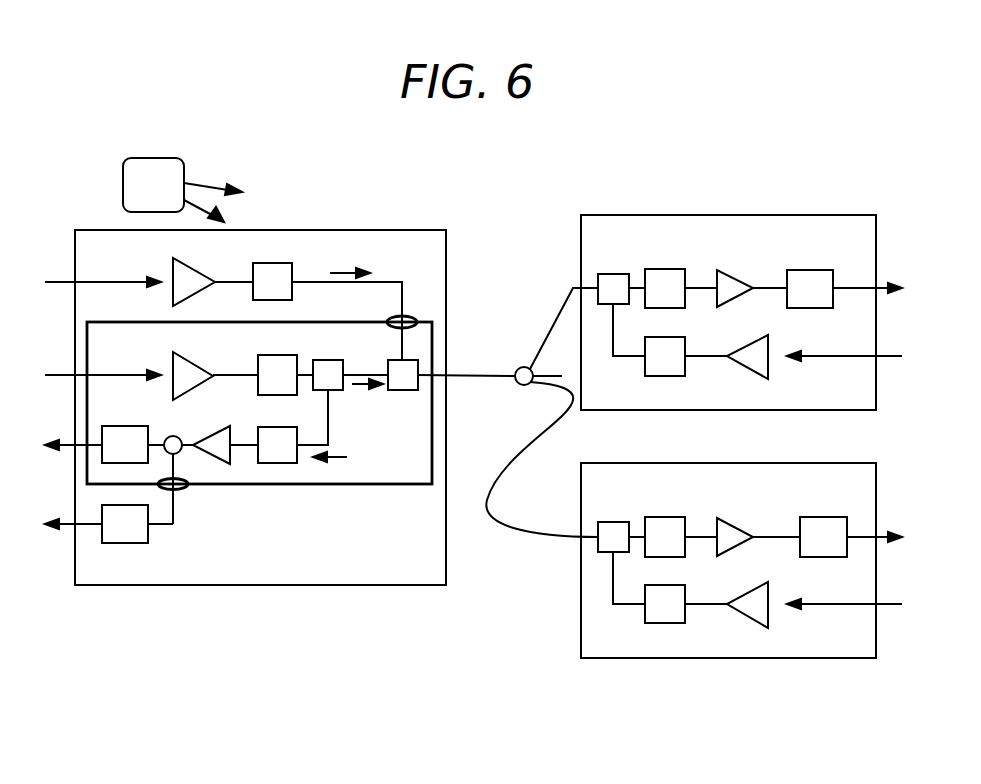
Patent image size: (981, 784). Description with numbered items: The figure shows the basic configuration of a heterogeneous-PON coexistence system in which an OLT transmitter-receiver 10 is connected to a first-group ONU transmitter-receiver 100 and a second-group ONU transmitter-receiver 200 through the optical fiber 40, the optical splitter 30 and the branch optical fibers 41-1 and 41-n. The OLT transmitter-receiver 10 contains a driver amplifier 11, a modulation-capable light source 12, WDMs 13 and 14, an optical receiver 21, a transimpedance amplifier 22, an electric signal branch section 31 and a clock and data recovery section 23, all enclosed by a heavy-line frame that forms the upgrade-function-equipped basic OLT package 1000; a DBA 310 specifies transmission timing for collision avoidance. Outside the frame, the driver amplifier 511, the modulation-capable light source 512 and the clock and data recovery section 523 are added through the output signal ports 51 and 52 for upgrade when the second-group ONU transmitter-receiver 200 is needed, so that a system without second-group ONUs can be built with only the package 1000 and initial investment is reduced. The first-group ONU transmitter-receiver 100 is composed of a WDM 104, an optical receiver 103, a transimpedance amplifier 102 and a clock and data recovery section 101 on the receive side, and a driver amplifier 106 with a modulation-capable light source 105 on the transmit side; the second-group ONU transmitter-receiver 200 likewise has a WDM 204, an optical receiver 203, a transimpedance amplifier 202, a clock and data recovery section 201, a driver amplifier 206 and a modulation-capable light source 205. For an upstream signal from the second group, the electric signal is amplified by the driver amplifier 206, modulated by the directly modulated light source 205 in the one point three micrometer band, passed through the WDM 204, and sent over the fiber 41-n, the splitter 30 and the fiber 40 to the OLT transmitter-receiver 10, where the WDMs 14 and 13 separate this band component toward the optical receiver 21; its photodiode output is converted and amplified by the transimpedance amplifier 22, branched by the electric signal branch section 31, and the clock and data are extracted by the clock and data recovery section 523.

The DBA 310 is at (123, 184).
The OLT transmitter-receiver 10 is at (320, 230).
The upgrade-function-equipped basic OLT package 1000 is at (345, 485).
The driver amplifier 511 is at (173, 270).
The modulation-capable light source 512 is at (253, 268).
The output signal port for upgrade 52 is at (406, 316).
The driver amplifier 11 is at (173, 362).
The modulation-capable light source 12 is at (258, 360).
The WDM 13 is at (313, 362).
The WDM 14 is at (388, 362).
The optical fiber 40 is at (478, 372).
The optical splitter 30 is at (522, 367).
The optical fiber 41-1 is at (558, 312).
The optical fiber 41-n is at (512, 532).
The optical receiver 21 is at (262, 427).
The transimpedance amplifier 22 is at (210, 436).
The clock and data recovery section 23 is at (122, 426).
The electric signal branch section 31 is at (180, 452).
The output signal port for upgrade 51 is at (185, 490).
The clock and data recovery section 523 is at (148, 533).
The first-group ONU transmitter-receiver 100 is at (718, 215).
The clock and data recovery section 101 is at (805, 270).
The transimpedance amplifier 102 is at (732, 270).
The optical receiver 103 is at (663, 269).
The WDM 104 is at (614, 274).
The modulation-capable light source 105 is at (645, 368).
The driver amplifier 106 is at (750, 375).
The second-group ONU transmitter-receiver 200 is at (725, 463).
The clock and data recovery section 201 is at (818, 517).
The transimpedance amplifier 202 is at (732, 518).
The optical receiver 203 is at (663, 517).
The WDM 204 is at (614, 522).
The modulation-capable light source 205 is at (645, 616).
The driver amplifier 206 is at (750, 623).